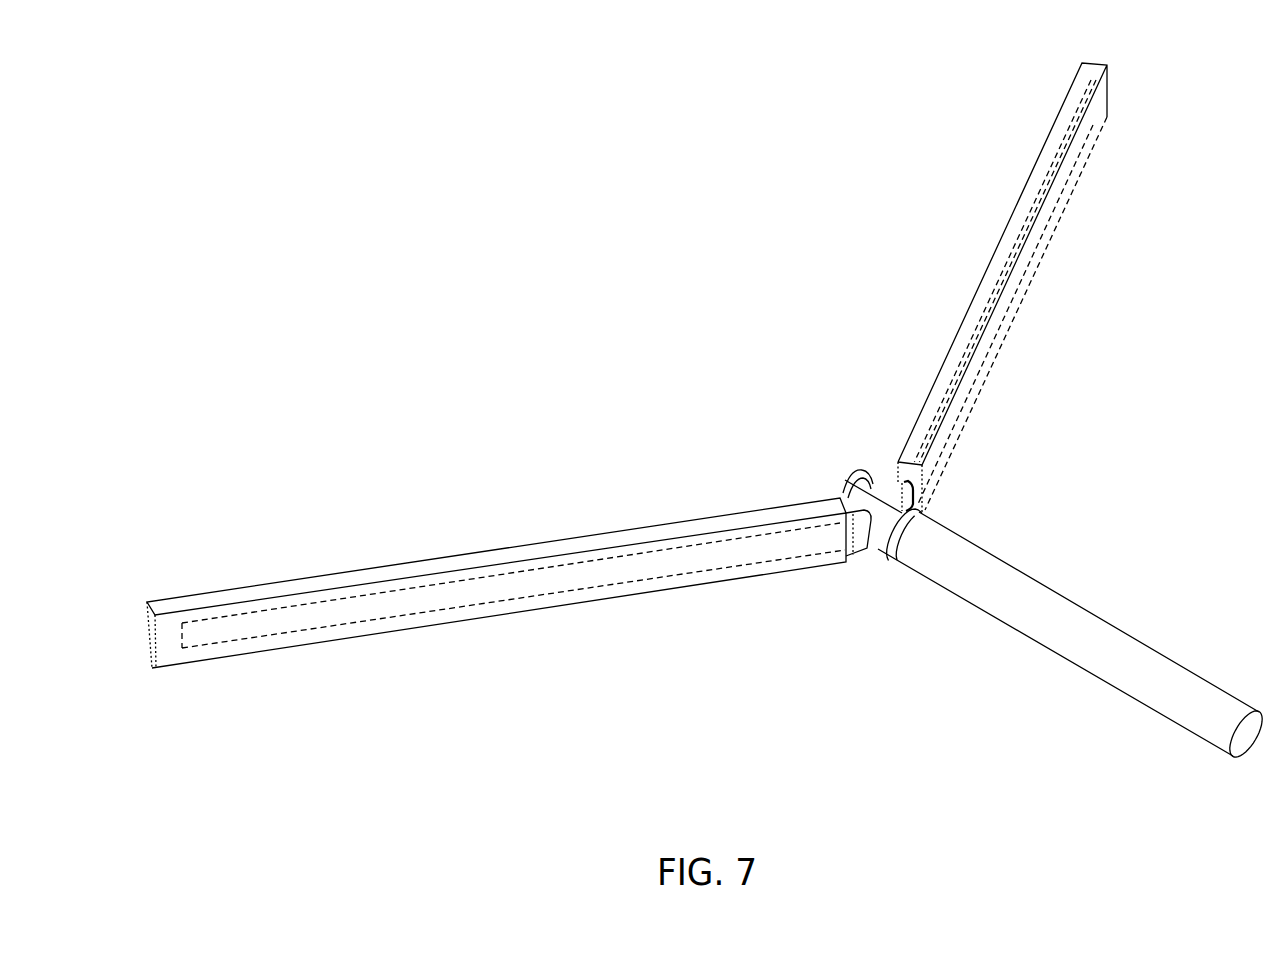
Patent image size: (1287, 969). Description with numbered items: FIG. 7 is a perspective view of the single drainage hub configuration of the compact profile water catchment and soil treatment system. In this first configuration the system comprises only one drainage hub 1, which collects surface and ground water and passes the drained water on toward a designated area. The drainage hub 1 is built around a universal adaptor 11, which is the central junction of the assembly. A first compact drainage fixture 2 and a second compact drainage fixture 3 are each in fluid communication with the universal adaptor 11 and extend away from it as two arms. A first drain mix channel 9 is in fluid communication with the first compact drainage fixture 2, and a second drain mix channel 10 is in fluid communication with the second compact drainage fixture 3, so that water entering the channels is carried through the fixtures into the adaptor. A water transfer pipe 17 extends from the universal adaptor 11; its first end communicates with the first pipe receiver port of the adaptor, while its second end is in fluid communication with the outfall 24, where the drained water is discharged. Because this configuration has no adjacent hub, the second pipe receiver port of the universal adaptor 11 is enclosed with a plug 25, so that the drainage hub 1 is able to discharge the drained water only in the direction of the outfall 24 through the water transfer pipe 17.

The drainage hub 1 is at (877, 427).
The first compact drainage fixture 2 is at (546, 584).
The second compact drainage fixture 3 is at (1012, 300).
The first drain mix channel 9 is at (466, 556).
The second drain mix channel 10 is at (1000, 265).
The universal adaptor 11 is at (885, 563).
The water transfer pipe 17 is at (1062, 574).
The outfall 24 is at (1238, 758).
The plug 25 is at (850, 490).